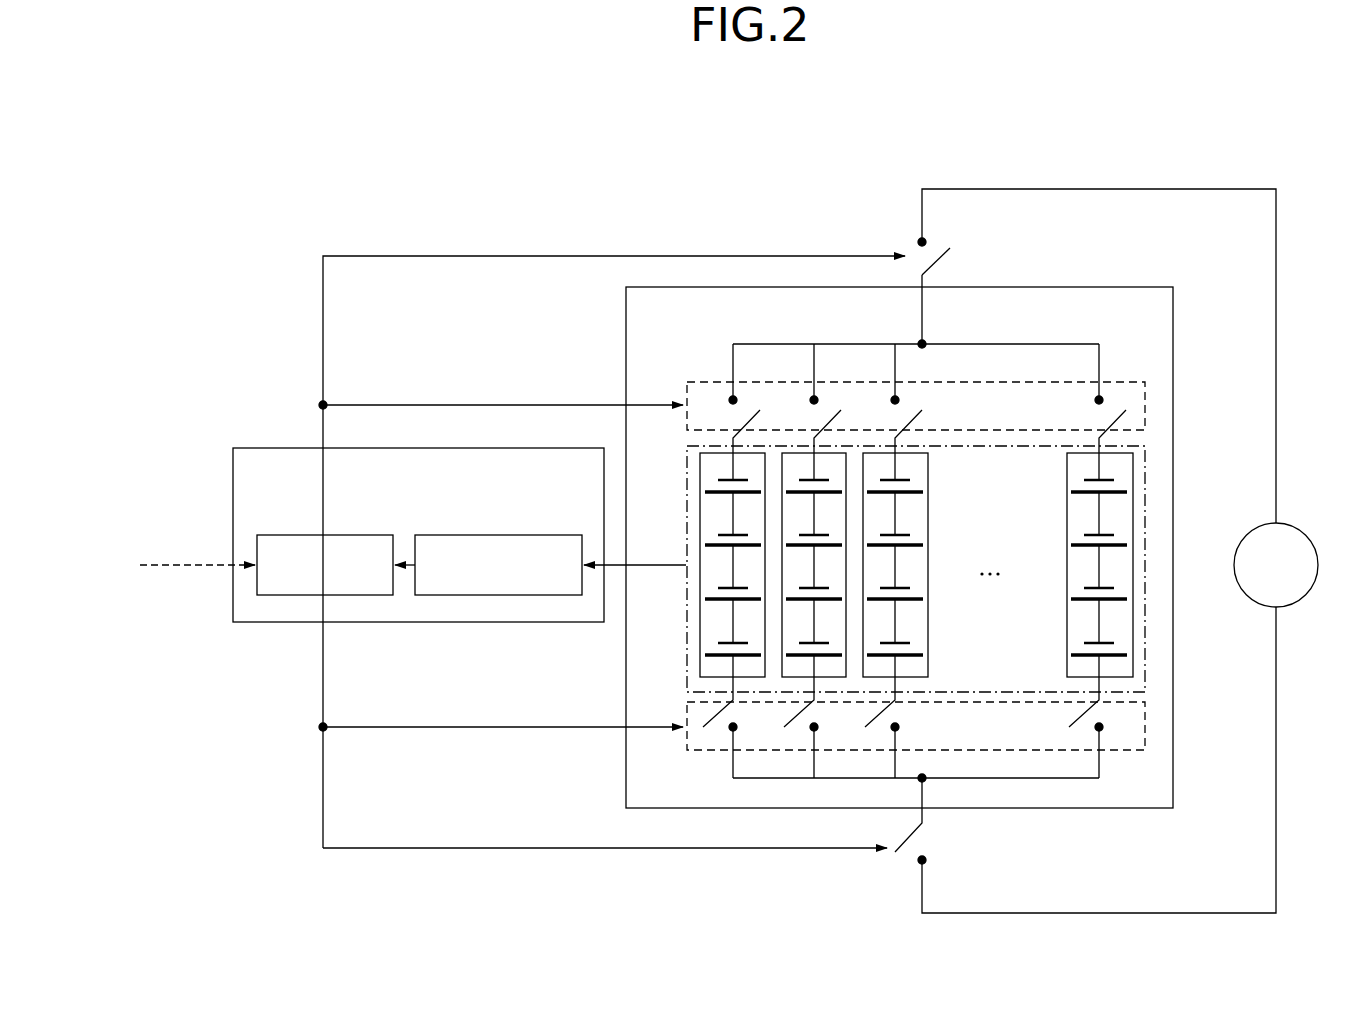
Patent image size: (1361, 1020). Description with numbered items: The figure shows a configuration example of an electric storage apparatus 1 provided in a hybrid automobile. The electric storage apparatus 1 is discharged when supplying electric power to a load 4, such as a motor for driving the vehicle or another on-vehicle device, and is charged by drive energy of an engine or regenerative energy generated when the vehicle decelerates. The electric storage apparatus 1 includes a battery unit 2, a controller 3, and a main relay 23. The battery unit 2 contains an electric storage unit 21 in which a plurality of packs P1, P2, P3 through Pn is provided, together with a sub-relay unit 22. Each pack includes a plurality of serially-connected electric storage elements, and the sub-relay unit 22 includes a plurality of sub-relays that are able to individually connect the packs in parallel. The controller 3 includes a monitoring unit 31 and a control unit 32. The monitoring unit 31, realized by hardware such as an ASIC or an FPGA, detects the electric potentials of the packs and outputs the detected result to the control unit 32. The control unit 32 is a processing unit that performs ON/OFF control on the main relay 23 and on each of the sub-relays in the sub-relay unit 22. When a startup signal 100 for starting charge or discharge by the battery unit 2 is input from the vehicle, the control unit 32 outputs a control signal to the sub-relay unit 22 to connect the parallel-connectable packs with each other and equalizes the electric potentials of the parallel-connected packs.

The electric storage apparatus 1 is at (852, 124).
The battery unit 2 is at (626, 310).
The controller 3 is at (552, 448).
The load 4 is at (1306, 534).
The electric storage unit 21 is at (1147, 636).
The sub-relay unit 22 is at (1147, 402).
The main relay 23 is at (962, 245).
The monitoring unit 31 is at (524, 535).
The control unit 32 is at (347, 535).
The startup signal 100 is at (190, 563).
The pack P1 is at (703, 680).
The pack P2 is at (784, 680).
The pack P3 is at (865, 680).
The pack Pn is at (1068, 680).